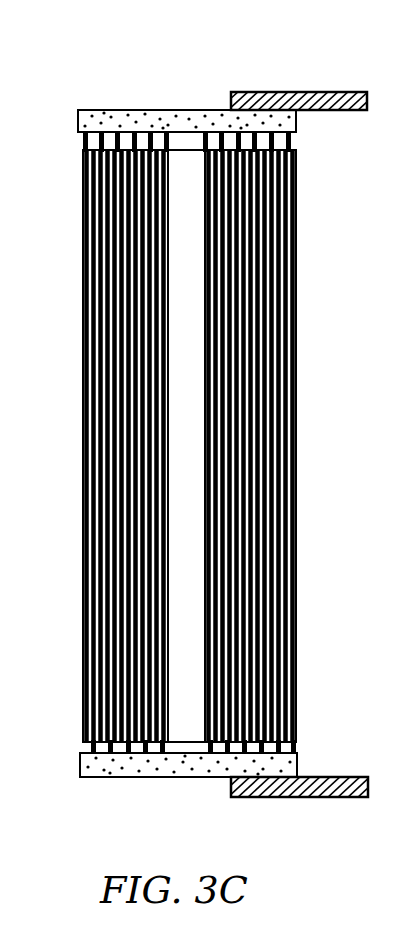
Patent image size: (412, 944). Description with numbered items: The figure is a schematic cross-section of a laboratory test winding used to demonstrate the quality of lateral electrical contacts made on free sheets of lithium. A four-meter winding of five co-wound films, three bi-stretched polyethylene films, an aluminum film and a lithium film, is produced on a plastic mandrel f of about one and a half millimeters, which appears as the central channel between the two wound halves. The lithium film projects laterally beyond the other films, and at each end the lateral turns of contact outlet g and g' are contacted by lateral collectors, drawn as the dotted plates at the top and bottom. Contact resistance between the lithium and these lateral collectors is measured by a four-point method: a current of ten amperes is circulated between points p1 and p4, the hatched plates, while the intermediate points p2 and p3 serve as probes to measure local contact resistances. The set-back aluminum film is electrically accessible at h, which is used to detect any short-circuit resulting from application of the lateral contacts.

The lateral turns of contact outlet g is at (187, 105).
The lateral turns of contact outlet g' is at (186, 791).
The plastic mandrel f is at (183, 156).
The electrical access to the aluminum film h is at (84, 226).
The current point p1 is at (336, 92).
The probe point p2 is at (192, 110).
The probe point p3 is at (148, 778).
The current point p4 is at (280, 798).